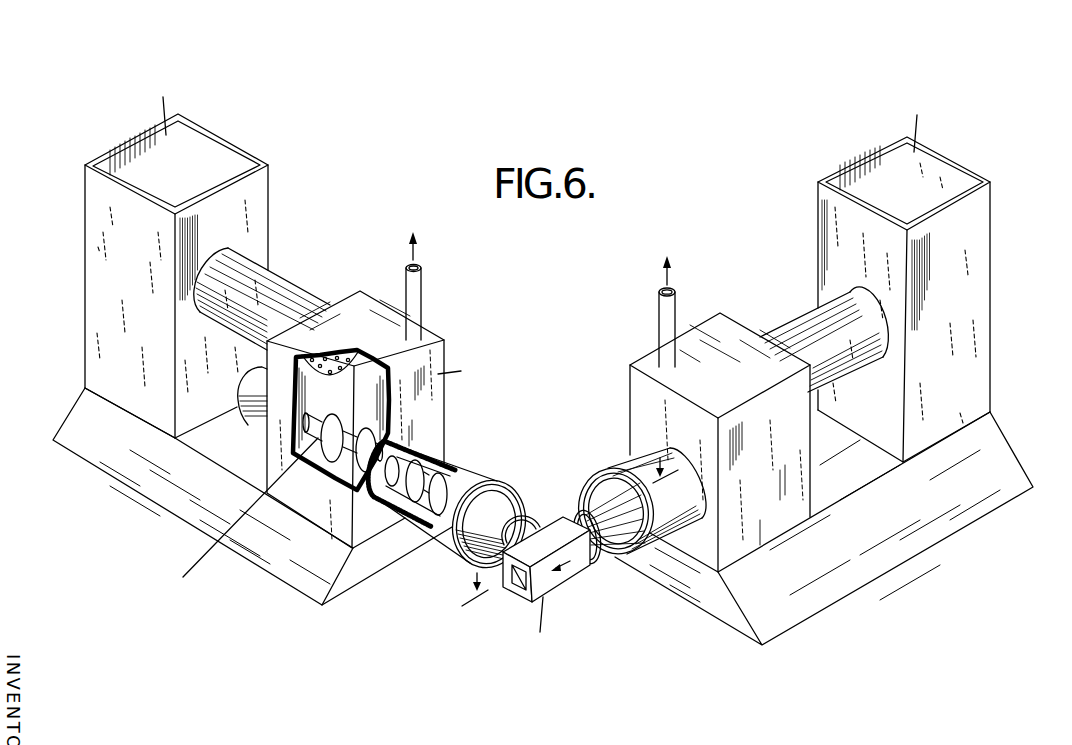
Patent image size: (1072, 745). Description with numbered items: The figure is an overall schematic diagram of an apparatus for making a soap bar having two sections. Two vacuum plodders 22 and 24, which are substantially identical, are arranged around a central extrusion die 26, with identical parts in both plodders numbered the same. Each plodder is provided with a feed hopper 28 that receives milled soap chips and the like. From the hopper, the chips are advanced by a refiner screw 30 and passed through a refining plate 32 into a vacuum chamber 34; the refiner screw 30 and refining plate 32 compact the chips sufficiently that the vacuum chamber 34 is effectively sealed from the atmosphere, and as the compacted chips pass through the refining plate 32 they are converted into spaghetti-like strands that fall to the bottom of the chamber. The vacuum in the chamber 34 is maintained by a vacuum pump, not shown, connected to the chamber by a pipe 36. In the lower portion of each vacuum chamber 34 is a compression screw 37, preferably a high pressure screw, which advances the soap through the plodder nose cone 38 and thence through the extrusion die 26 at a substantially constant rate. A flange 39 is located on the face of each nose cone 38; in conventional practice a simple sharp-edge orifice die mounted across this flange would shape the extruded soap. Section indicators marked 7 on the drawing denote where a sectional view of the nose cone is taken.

The vacuum plodder 22 is at (78, 259).
The vacuum plodder 24 is at (808, 243).
The extrusion die 26 is at (522, 587).
The feed hopper 28 is at (222, 153).
The refiner screw 30 is at (296, 287).
The refining plate 32 is at (331, 373).
The vacuum chamber 34 is at (437, 418).
The pipe 36 is at (422, 291).
The compression screw 37 is at (345, 459).
The plodder nose cone 38 is at (500, 503).
The flange 39 is at (574, 514).
The section line for FIG. 7 is at (568, 531).